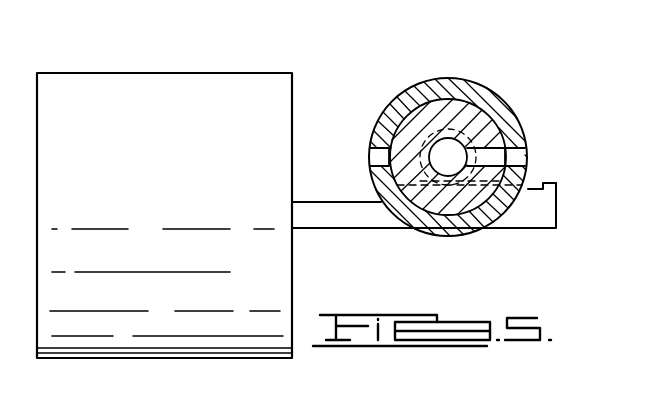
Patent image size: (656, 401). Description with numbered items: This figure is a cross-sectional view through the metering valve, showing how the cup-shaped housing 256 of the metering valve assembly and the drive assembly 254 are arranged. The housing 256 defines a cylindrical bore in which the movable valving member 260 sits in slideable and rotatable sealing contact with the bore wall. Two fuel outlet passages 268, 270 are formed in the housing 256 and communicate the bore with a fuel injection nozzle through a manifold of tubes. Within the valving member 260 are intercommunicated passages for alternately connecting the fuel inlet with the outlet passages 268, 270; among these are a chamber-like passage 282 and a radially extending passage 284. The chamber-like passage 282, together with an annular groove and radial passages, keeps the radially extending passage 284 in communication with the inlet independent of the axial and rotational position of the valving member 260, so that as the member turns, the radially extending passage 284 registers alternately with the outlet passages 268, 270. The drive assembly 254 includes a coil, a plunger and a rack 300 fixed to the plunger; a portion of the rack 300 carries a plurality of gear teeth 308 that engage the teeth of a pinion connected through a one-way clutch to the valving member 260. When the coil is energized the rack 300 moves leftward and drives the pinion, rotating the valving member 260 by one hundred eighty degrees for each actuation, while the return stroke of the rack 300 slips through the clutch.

The drive assembly 254 is at (212, 68).
The cup-shaped housing 256 is at (495, 80).
The movable valving member 260 is at (421, 92).
The fuel outlet passage 268 is at (374, 157).
The fuel outlet passage 270 is at (526, 150).
The chamber-like passage 282 is at (445, 148).
The radially extending passage 284 is at (497, 135).
The rack 300 is at (328, 219).
The gear teeth 308 is at (535, 183).